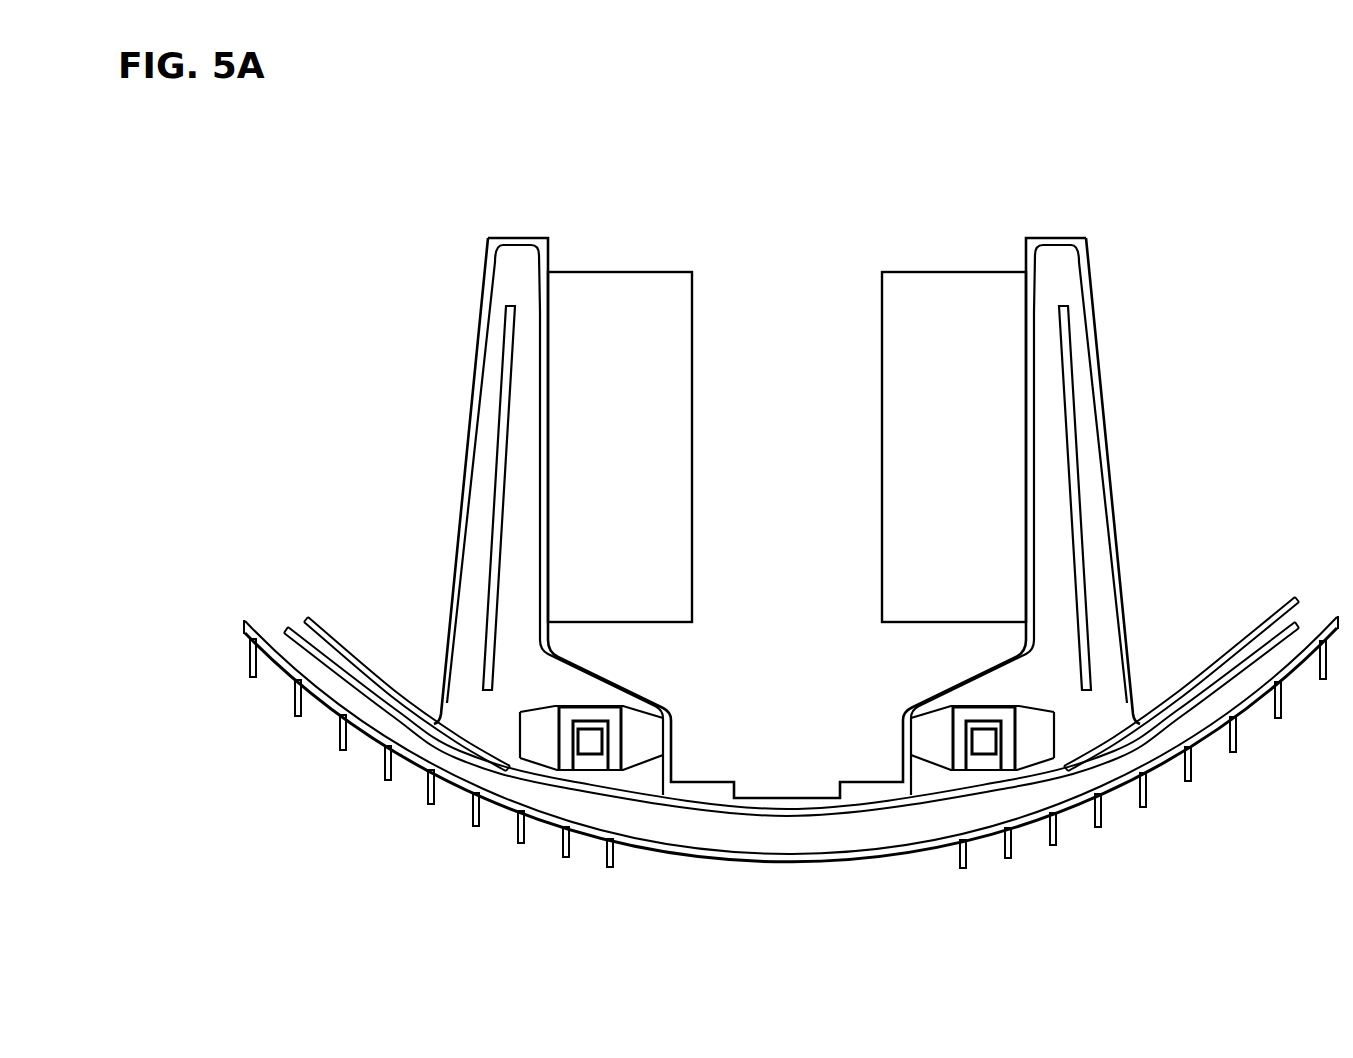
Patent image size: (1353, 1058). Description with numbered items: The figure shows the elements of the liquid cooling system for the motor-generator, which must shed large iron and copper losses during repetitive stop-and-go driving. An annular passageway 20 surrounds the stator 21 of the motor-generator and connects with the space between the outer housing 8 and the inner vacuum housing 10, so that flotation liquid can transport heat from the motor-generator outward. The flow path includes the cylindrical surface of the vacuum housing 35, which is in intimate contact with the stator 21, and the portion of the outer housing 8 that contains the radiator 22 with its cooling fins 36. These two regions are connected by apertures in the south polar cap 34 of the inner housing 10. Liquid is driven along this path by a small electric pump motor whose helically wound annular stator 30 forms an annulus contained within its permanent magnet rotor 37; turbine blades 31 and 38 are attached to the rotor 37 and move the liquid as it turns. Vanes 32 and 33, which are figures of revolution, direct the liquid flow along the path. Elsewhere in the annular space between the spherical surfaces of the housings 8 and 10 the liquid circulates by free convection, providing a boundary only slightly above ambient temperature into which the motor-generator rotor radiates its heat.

The outer housing 8 is at (1240, 641).
The inner housing 10 is at (252, 628).
The annular passageway 20 is at (510, 271).
The stator 21 is at (930, 300).
The radiator 22 is at (340, 738).
The annular wound stator 30 is at (978, 757).
The turbine blade 31 is at (1035, 755).
The vane 32 is at (505, 353).
The vane 33 is at (290, 628).
The south polar cap 34 is at (543, 772).
The cylindrical surface of the vacuum housing 35 is at (1030, 325).
The cooling fins 36 is at (452, 778).
The permanent magnet rotor 37 is at (930, 745).
The turbine blade 38 is at (641, 750).